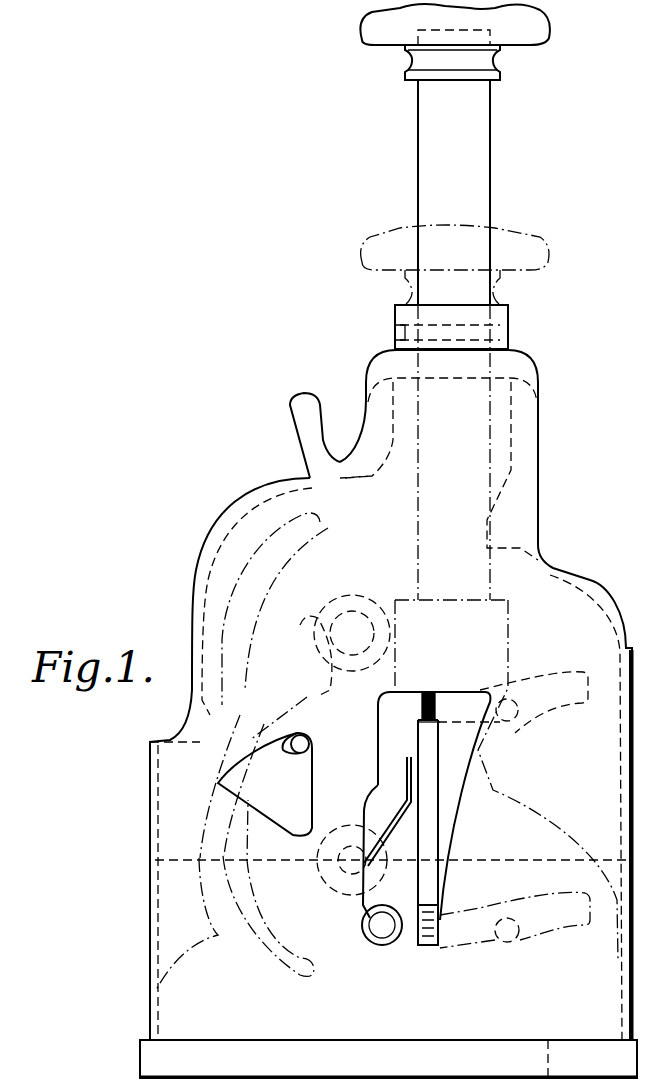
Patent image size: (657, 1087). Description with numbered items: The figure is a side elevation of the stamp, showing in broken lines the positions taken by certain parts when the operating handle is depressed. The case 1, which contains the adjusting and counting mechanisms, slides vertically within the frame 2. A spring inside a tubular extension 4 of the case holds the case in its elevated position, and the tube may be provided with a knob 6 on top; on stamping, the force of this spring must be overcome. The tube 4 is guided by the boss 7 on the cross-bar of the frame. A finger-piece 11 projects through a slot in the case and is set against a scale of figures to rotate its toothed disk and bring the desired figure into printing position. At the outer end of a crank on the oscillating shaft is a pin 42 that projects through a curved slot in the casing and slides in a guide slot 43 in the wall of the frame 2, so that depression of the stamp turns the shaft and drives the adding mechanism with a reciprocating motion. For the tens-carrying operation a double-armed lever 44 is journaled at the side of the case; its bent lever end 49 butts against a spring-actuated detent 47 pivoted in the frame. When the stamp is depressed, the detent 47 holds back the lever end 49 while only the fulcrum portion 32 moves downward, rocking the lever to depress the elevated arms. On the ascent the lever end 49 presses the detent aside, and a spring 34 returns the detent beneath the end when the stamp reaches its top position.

The case 1 is at (527, 578).
The frame 2 is at (624, 952).
The tubular extension 4 is at (488, 168).
The knob 6 is at (520, 36).
The boss 7 is at (505, 320).
The finger-piece 11 is at (322, 398).
The fulcrum portion 32 is at (504, 940).
The spring 34 is at (395, 826).
The pin 42 is at (312, 746).
The guide slot 43 is at (262, 830).
The double-armed lever 44 is at (446, 945).
The detent 47 is at (372, 938).
The lever end 49 is at (420, 695).